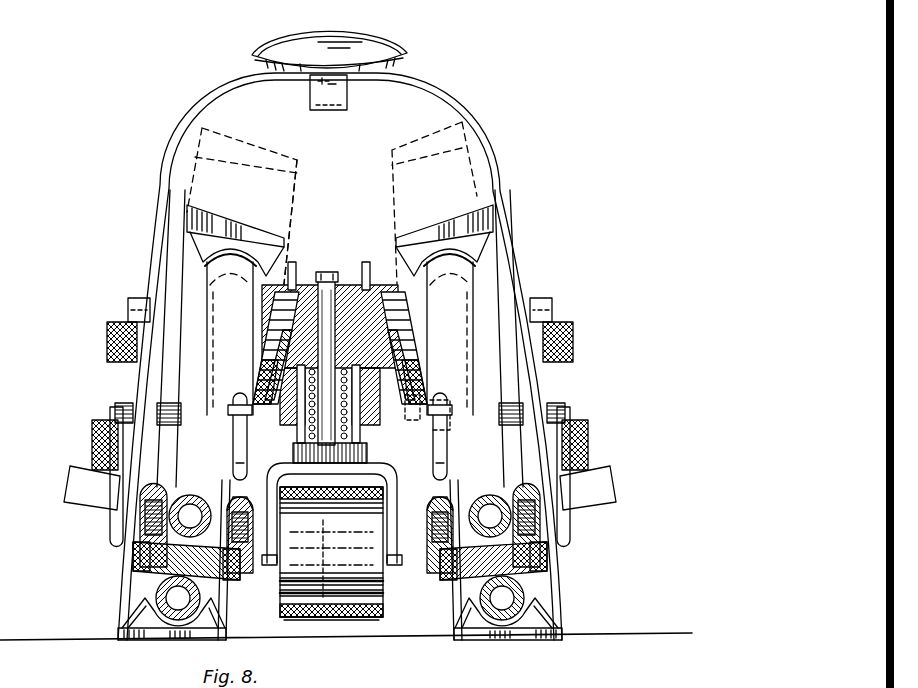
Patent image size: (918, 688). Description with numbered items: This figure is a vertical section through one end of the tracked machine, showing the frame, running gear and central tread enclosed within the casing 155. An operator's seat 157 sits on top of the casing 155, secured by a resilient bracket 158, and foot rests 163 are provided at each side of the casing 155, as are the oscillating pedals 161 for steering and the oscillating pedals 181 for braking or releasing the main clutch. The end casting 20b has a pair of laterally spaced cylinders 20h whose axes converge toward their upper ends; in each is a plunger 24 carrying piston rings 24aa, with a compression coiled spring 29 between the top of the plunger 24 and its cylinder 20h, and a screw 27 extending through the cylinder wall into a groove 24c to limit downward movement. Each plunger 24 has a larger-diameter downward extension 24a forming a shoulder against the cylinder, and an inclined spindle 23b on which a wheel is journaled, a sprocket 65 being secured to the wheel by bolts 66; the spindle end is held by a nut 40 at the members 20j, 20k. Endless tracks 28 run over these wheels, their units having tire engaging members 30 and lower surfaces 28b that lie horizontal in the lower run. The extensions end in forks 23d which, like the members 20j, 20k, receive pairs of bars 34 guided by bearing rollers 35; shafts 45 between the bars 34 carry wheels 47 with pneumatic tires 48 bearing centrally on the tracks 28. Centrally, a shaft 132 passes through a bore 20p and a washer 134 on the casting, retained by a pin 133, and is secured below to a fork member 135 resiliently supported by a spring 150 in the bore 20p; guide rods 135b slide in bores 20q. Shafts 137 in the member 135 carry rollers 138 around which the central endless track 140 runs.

The casing 155 is at (504, 256).
The operator's seat 157 is at (357, 42).
The resilient bracket 158 is at (347, 92).
The endless track 28 is at (190, 220).
The spindle 23b is at (190, 410).
The cylinder 20h is at (340, 338).
The piston ring 24aa is at (263, 298).
The plunger 24 is at (262, 400).
The compression coiled spring 29 is at (265, 322).
The screw 27 is at (272, 345).
The groove 24c is at (266, 372).
The washer 134 is at (364, 268).
The pin 133 is at (320, 282).
The shaft 132 is at (330, 272).
The casting 20b is at (316, 285).
The spring 150 is at (350, 440).
The fork member 135 is at (361, 455).
The guide rod 135b is at (332, 514).
The extension 24a is at (388, 512).
The shaft 137 is at (372, 568).
The roller 138 is at (385, 612).
The endless track 140 is at (351, 617).
The oscillating pedal 181 is at (108, 330).
The oscillating pedal 161 is at (92, 440).
The member 20k is at (117, 420).
The member 20j is at (549, 412).
The foot rest 163 is at (70, 490).
The nut 40 is at (158, 410).
The sprocket 65 is at (233, 430).
The bolt 66 is at (228, 409).
The bearing roller 35 is at (142, 500).
The fork 23d is at (246, 573).
The wheel 47 is at (160, 571).
The shaft 45 is at (133, 558).
The bar 34 is at (228, 581).
The pneumatic tire 48 is at (200, 604).
The tire engaging member 30 is at (140, 610).
The lower surface 28b is at (122, 630).
The bore 20p is at (412, 396).
The bore 20q is at (432, 403).